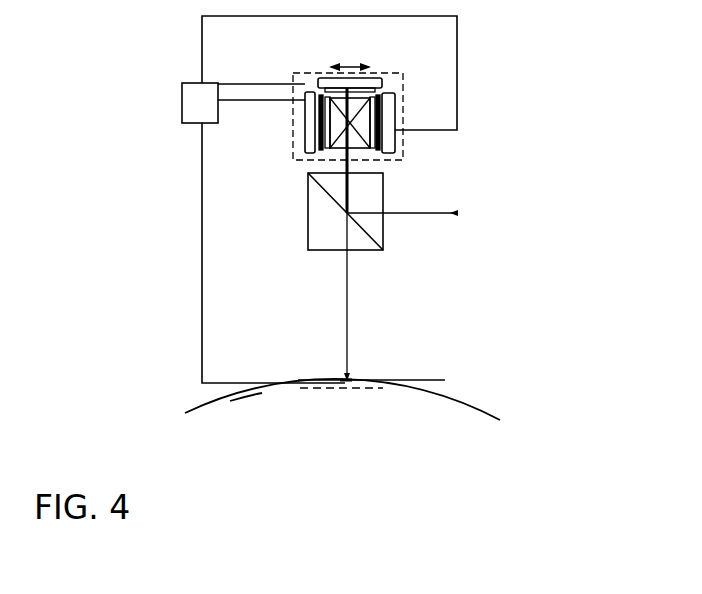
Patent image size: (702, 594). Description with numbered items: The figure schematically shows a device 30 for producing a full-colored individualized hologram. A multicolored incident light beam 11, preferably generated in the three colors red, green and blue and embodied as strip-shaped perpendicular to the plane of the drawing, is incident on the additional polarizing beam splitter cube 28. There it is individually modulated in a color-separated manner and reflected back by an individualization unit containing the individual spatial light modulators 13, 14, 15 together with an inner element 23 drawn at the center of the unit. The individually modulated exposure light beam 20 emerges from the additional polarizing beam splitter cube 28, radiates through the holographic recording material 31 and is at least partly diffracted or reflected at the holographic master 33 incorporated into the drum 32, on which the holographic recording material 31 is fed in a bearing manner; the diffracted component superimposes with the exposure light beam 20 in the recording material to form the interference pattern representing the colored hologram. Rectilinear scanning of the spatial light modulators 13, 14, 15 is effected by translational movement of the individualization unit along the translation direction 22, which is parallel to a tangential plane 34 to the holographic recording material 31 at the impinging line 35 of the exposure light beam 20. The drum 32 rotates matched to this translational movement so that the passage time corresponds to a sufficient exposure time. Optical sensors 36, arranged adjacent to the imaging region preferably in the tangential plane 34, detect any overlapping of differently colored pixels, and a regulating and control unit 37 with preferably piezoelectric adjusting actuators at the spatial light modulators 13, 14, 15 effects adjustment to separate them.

The device 30 is at (158, 165).
The regulating and control unit 37 is at (182, 95).
The spatial light modulator 15 is at (378, 80).
The spatial light modulator 13 is at (305, 135).
The spatial light modulator 14 is at (395, 110).
The mirror element 23 is at (325, 150).
The translation direction 22 is at (353, 65).
The exposure light beam 20 is at (348, 320).
The additional polarizing beam splitter cube 28 is at (315, 220).
The incident light beam 11 is at (428, 213).
The tangential plane 34 is at (437, 380).
The impinging line 35 is at (349, 379).
The optical sensors 36 is at (373, 389).
The holographic recording material 31 is at (198, 404).
The holographic master 33 is at (250, 401).
The drum 32 is at (228, 446).